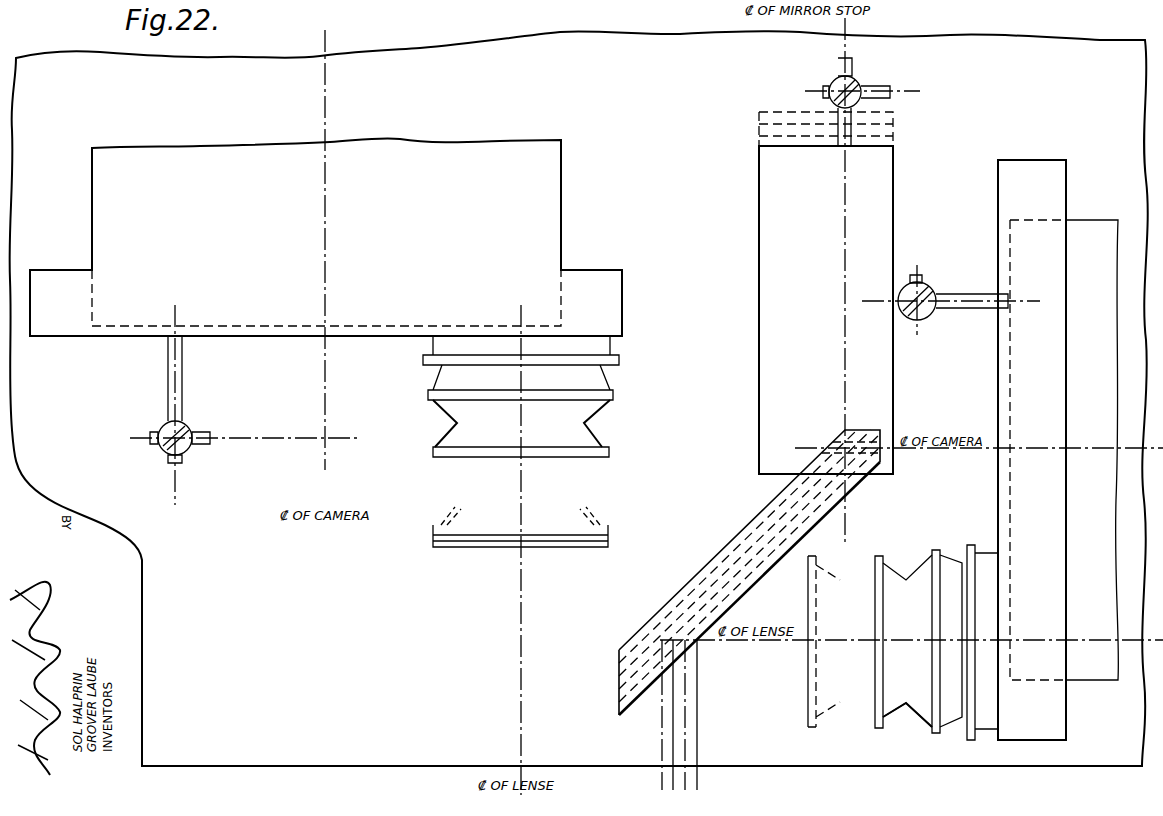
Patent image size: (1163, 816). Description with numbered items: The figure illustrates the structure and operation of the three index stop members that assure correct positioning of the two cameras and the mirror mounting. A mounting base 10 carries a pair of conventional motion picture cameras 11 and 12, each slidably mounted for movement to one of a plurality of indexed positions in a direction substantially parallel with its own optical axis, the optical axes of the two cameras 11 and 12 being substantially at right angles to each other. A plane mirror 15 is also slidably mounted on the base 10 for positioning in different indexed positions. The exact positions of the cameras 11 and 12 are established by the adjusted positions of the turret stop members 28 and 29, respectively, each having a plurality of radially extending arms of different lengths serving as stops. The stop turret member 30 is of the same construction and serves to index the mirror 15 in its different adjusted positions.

The mounting base 10 is at (653, 40).
The motion picture camera 11 is at (560, 212).
The motion picture camera 12 is at (1093, 230).
The plane mirror 15 is at (722, 583).
The turret stop member 28 is at (924, 319).
The turret stop member 29 is at (160, 428).
The stop turret member 30 is at (860, 74).